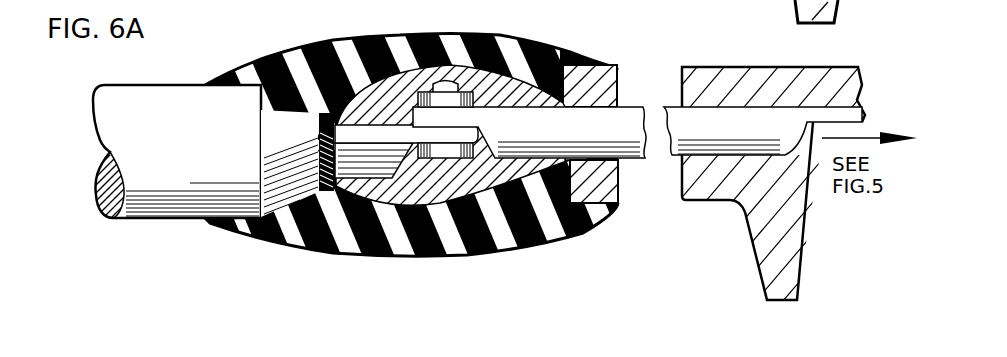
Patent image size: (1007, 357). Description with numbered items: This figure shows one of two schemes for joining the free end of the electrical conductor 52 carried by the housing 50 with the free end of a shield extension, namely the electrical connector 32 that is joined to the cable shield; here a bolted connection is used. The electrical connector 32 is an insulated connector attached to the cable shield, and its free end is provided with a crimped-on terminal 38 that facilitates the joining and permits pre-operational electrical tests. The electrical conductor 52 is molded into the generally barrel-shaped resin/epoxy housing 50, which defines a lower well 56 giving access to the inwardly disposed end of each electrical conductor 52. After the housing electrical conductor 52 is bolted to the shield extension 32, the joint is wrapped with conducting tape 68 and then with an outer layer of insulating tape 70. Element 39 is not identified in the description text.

The electrical connector 32 is at (142, 200).
The crimped-on terminal 38 is at (367, 140).
The sealing ring 39 is at (325, 142).
The housing 50 is at (756, 217).
The electrical conductor 52 is at (710, 125).
The lower well 56 is at (805, 240).
The conducting tape 68 is at (515, 88).
The insulating tape 70 is at (592, 60).